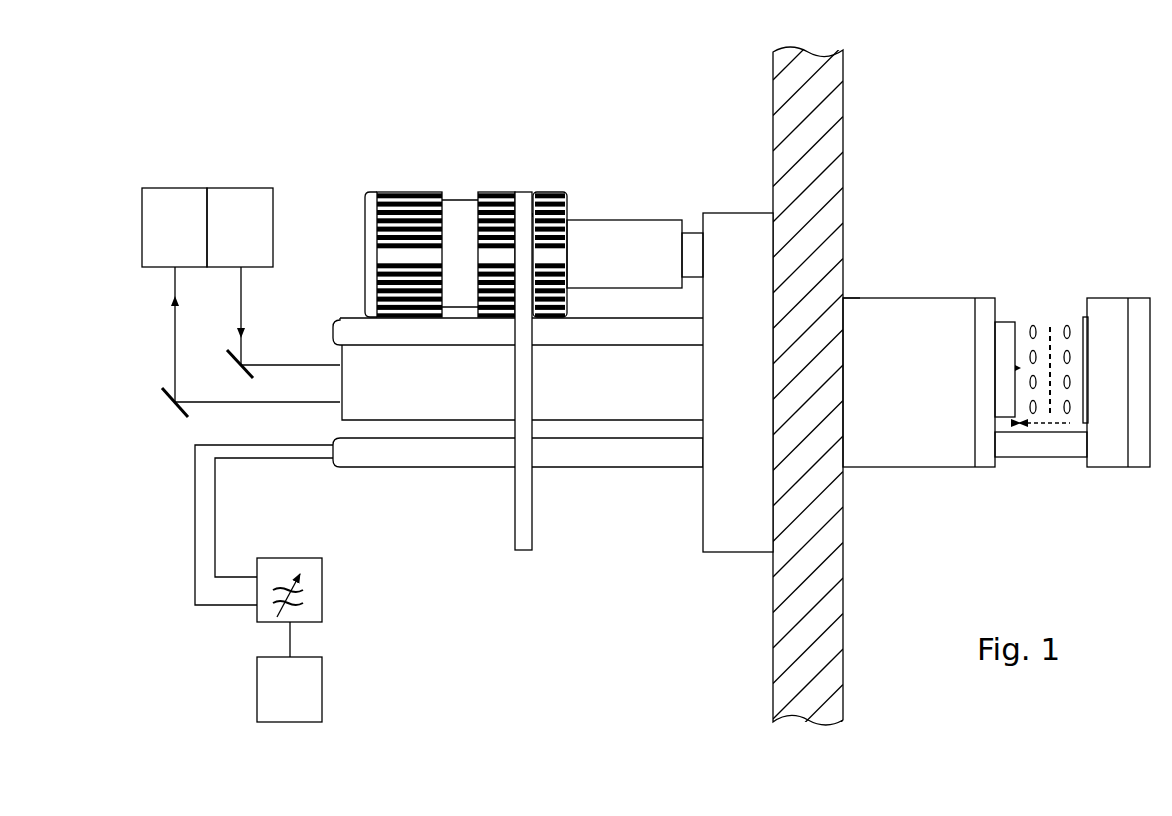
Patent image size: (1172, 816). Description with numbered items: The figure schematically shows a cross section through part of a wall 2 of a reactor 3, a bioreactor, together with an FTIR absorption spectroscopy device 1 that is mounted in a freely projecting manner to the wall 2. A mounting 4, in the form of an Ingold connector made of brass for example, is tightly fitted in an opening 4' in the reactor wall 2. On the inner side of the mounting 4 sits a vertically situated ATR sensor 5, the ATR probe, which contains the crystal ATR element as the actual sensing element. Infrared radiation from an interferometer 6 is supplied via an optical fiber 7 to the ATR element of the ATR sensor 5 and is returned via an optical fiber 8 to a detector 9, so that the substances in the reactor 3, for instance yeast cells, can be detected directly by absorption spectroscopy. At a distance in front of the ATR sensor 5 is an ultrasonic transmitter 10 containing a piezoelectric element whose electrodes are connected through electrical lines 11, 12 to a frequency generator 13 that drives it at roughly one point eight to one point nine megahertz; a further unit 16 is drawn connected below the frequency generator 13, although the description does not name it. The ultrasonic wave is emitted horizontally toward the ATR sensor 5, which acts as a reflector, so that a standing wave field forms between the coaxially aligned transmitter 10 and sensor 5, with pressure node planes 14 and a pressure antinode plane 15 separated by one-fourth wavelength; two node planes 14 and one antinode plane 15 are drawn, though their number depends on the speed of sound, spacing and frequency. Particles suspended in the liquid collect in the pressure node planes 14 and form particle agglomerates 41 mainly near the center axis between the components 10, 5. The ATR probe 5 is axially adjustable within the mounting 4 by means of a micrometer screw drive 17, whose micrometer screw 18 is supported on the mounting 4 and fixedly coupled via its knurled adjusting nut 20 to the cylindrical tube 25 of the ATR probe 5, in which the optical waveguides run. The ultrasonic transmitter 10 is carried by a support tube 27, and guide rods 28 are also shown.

The FTIR absorption spectroscopy device 1 is at (1048, 103).
The wall 2 is at (800, 133).
The reactor 3 is at (985, 148).
The mounting 4 is at (919, 410).
The opening 4' is at (869, 268).
The ATR sensor 5 is at (980, 327).
The interferometer 6 is at (235, 217).
The optical fiber 7 is at (242, 298).
The optical fiber 8 is at (172, 347).
The detector 9 is at (168, 217).
The ultrasonic transmitter 10 is at (1107, 330).
The electrical line 11 is at (217, 535).
The electrical line 12 is at (195, 488).
The frequency generator 13 is at (322, 603).
The pressure node planes 14 is at (1033, 325).
The pressure antinode plane 15 is at (1050, 327).
The pump unit 16 is at (322, 677).
The micrometer screw drive 17 is at (527, 173).
The micrometer screw 18 is at (588, 240).
The knurled adjusting nut 20 is at (493, 190).
The cylindrical tube 25 is at (465, 380).
The support tube 27 is at (572, 450).
The guide rods 28 is at (617, 330).
The particle agglomerates 41 is at (1068, 420).